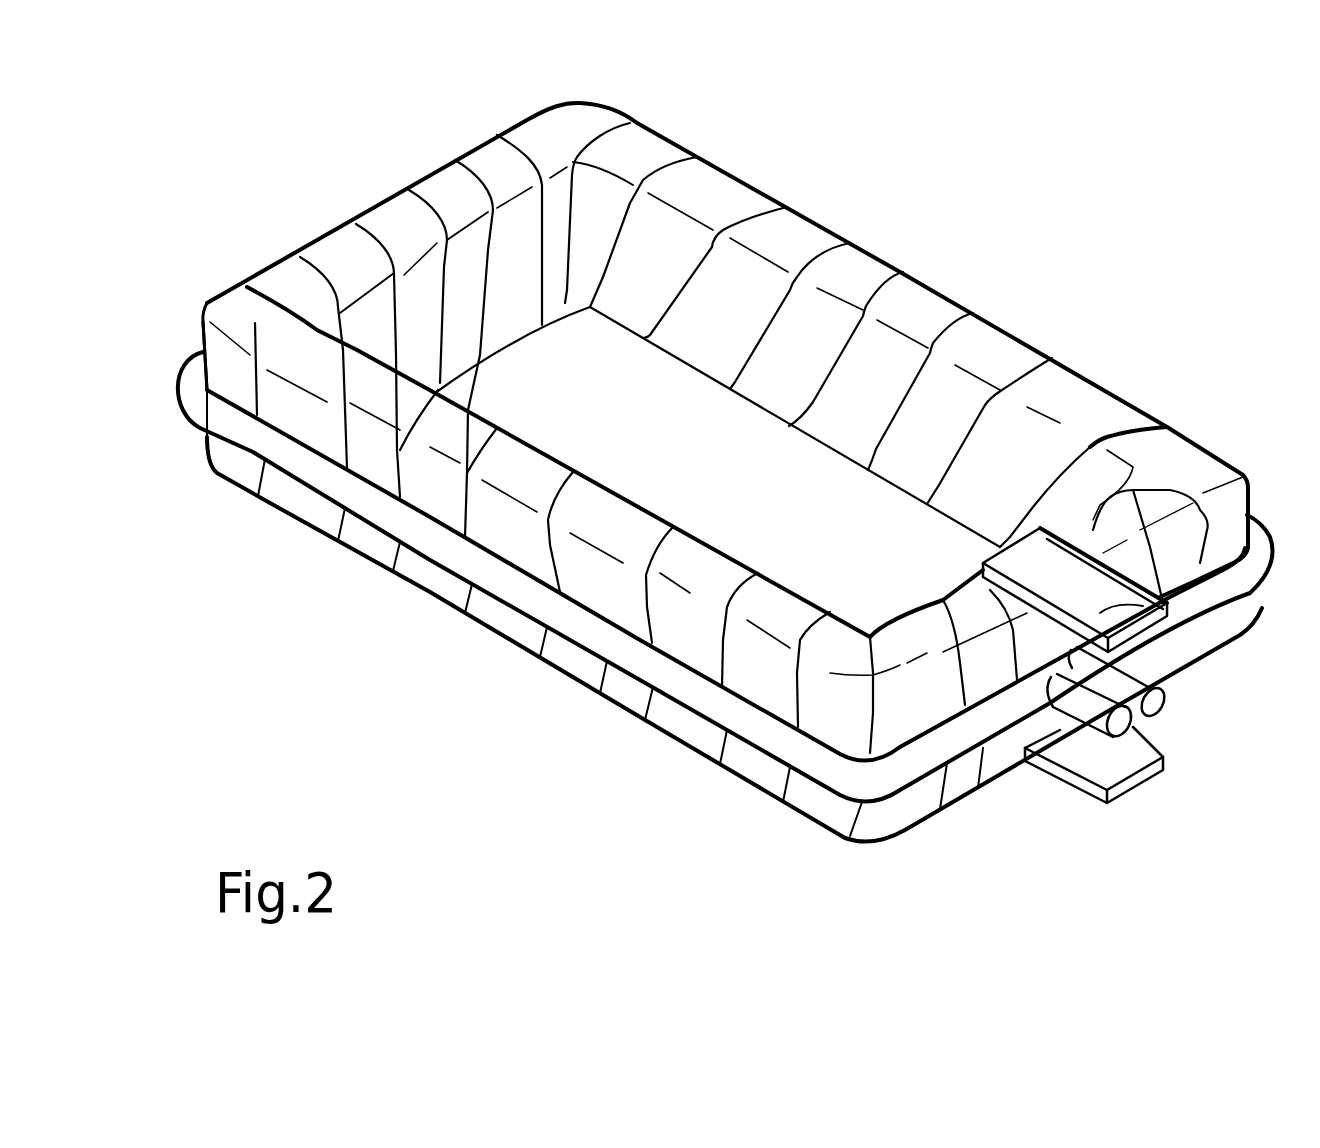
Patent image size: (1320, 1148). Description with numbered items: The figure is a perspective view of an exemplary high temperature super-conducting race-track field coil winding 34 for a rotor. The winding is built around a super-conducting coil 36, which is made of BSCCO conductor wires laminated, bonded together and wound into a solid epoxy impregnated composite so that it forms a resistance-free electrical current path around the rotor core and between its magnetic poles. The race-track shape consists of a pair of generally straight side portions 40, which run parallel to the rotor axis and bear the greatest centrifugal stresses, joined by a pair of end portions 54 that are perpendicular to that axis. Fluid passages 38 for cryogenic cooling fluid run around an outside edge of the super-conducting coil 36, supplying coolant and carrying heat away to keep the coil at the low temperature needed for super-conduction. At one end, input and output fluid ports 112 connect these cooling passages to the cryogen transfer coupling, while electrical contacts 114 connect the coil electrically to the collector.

The race-track field coil winding 34 is at (328, 132).
The super-conducting coil 36 is at (988, 360).
The fluid passages 38 is at (573, 633).
The side portions 40 is at (452, 612).
The end portions 54 is at (305, 280).
The fluid ports 112 is at (1143, 723).
The electrical contacts 114 is at (1195, 627).